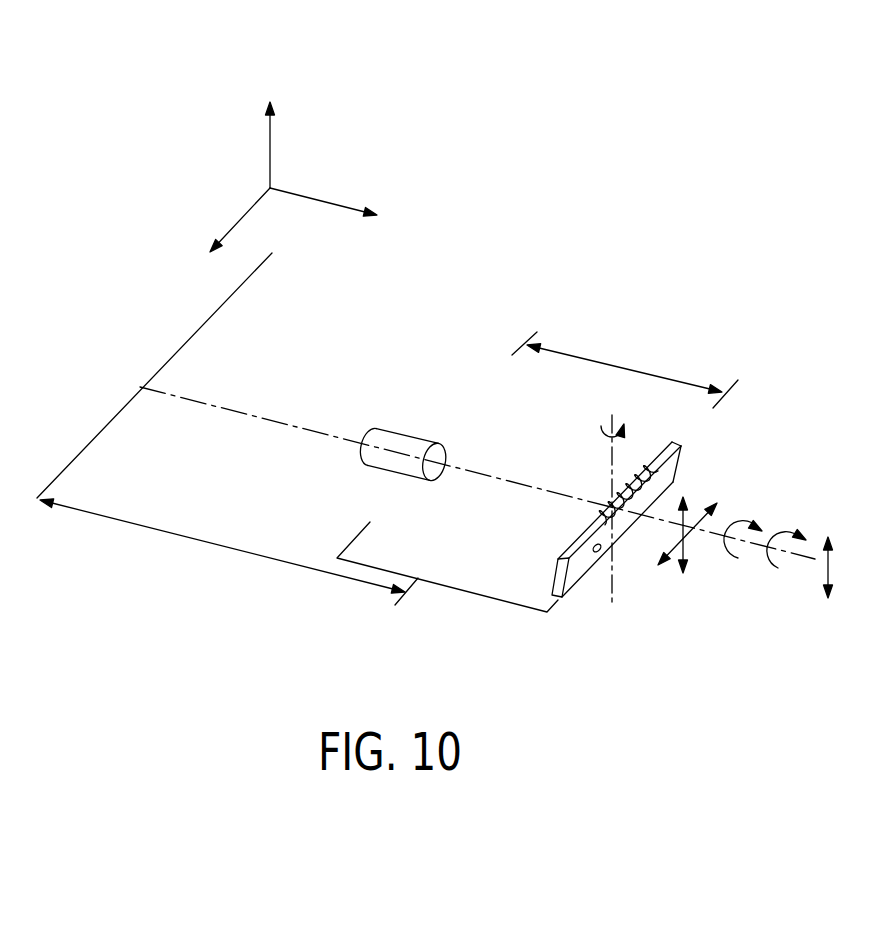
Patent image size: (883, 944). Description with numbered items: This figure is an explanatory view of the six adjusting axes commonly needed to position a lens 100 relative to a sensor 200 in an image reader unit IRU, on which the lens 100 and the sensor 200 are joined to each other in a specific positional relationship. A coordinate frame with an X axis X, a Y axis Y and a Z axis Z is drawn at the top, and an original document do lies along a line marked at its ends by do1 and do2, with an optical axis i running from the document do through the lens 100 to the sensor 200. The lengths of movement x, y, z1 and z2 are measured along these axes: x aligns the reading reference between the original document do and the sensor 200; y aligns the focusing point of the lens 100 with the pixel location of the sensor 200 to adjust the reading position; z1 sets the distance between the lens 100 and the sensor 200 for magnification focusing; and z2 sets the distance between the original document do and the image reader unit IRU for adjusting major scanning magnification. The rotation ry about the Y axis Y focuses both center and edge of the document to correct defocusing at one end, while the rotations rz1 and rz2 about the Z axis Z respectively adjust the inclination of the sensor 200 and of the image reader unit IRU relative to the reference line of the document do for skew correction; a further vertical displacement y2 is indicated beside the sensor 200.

The lens 100 is at (400, 432).
The sensor 200 is at (668, 471).
The image reader unit IRU is at (455, 588).
The original document do is at (228, 311).
The document position 1 do1 is at (142, 388).
The document position 2 do2 is at (272, 253).
The optical axis i is at (303, 431).
The length of movement along the Z axis between lens and sensor z1 is at (625, 369).
The length of movement along the Z axis between document and image reader unit z2 is at (229, 552).
The angle of rotation around the Y axis ry is at (628, 504).
The angle of rotation of the sensor around the Z axis rz1 is at (743, 519).
The angle of rotation of the image reader unit around the Z axis rz2 is at (790, 533).
The displacement y2 is at (846, 567).
The length of movement along the X axis x is at (678, 545).
The length of movement along the Y axis y is at (692, 521).
The X axis X is at (226, 233).
The Y axis Y is at (270, 124).
The Z axis Z is at (335, 210).